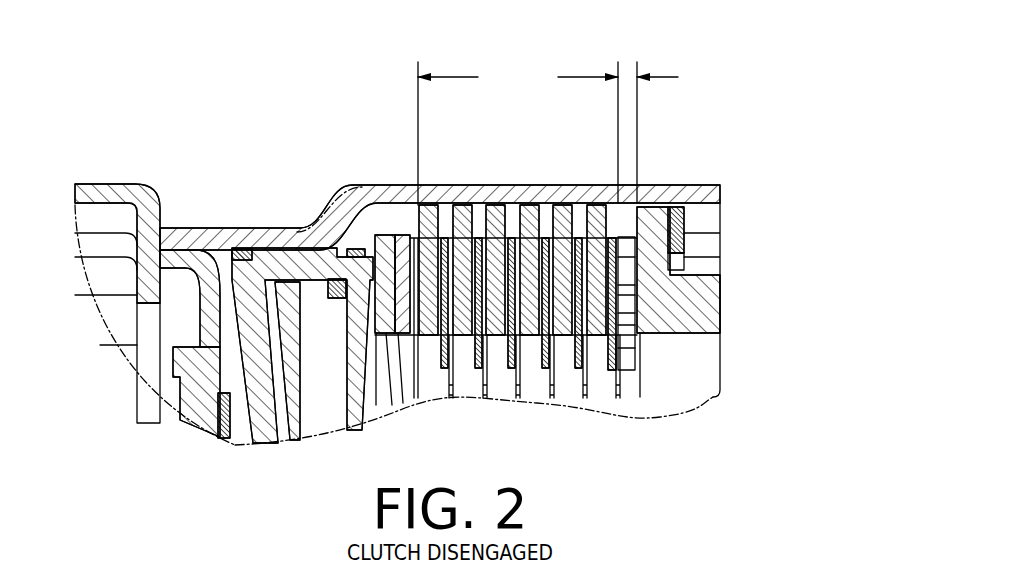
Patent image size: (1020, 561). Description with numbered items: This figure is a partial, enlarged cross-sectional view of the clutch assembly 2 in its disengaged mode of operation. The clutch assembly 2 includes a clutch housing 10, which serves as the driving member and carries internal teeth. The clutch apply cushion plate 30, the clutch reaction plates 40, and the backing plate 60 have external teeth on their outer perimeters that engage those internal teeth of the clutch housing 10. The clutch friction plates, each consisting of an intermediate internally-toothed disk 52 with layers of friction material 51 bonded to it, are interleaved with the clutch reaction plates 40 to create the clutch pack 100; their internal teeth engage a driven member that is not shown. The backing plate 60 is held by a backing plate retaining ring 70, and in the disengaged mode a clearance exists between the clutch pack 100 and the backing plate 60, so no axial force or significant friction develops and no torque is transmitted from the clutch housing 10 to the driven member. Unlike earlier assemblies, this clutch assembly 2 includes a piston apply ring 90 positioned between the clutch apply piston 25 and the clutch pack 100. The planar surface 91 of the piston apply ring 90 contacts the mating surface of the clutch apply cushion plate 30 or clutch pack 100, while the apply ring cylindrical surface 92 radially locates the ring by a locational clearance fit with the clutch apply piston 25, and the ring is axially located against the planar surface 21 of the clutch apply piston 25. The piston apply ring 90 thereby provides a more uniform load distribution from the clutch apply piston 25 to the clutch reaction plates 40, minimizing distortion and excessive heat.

The clutch assembly 2 is at (658, 445).
The clutch housing 10 is at (237, 228).
The planar surface 21 is at (378, 265).
The clutch apply piston 25 is at (303, 248).
The clutch apply cushion plate 30 is at (405, 235).
The clutch reaction plates 40 is at (431, 203).
The friction material 51 is at (611, 238).
The internally-toothed disk 52 is at (447, 365).
The backing plate 60 is at (653, 207).
The backing plate retaining ring 70 is at (677, 220).
The piston apply ring 90 is at (367, 228).
The planar surface 91 is at (398, 302).
The apply ring cylindrical surface 92 is at (357, 258).
The clutch pack 100 is at (520, 52).